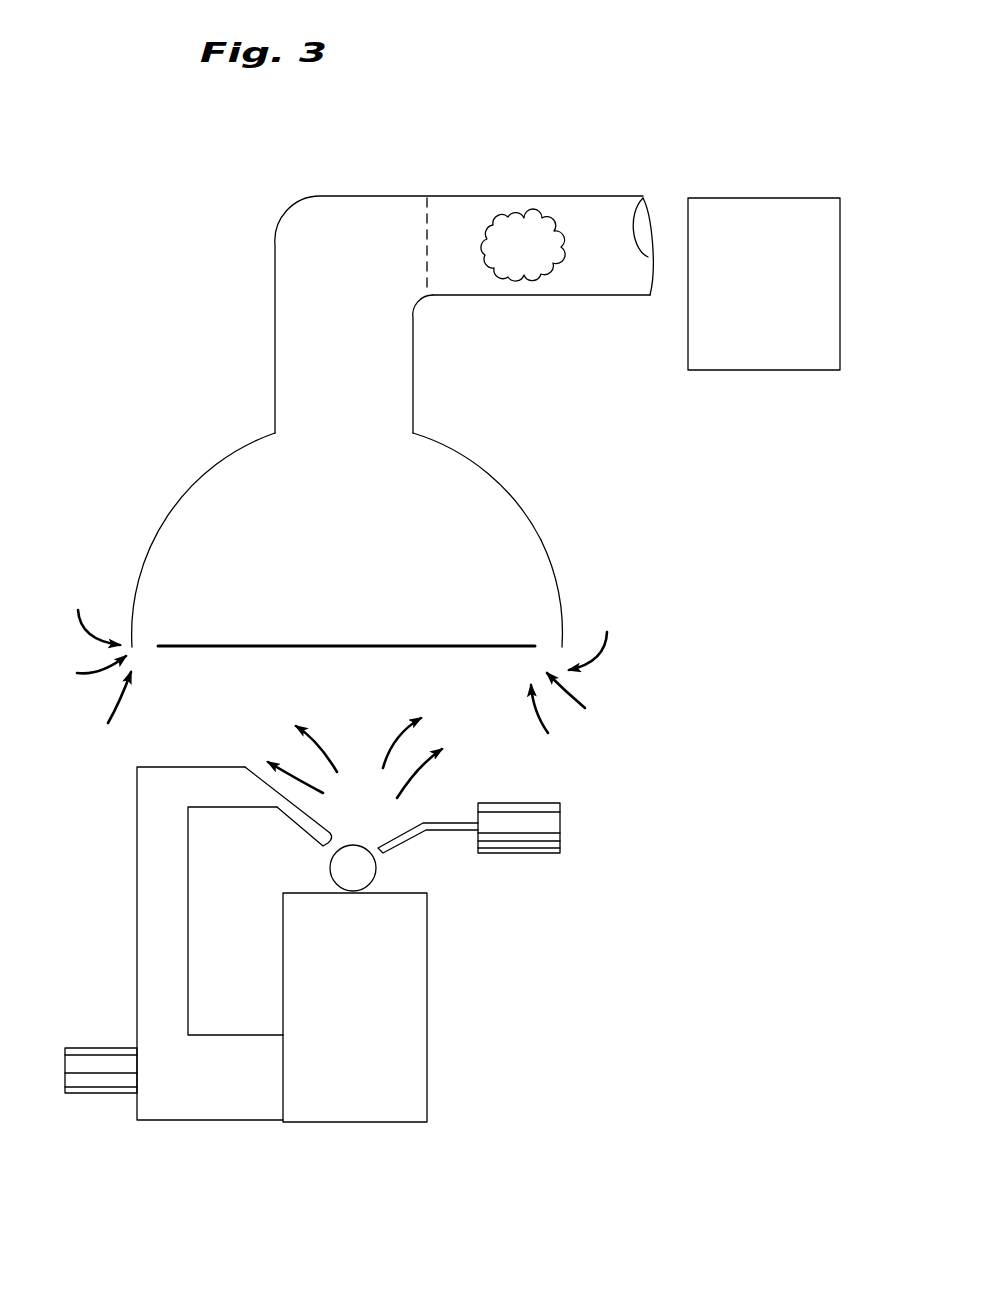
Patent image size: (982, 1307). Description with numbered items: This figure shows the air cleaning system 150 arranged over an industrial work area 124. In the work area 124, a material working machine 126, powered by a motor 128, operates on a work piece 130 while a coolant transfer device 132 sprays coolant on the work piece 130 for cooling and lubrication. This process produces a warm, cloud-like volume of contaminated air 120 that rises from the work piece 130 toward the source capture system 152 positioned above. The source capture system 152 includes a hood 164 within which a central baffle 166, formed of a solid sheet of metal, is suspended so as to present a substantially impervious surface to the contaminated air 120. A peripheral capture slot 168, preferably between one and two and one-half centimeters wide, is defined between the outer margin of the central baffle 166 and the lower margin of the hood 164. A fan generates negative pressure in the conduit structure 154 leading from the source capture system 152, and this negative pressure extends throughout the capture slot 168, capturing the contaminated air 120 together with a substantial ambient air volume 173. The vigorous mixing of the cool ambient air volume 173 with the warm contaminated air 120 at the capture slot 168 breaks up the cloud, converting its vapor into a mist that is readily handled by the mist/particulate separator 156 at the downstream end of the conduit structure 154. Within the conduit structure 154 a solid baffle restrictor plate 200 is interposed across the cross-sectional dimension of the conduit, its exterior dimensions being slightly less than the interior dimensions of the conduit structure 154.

The contaminated air 120 is at (323, 786).
The work area 124 is at (344, 803).
The material working machine 126 is at (152, 900).
The motor 128 is at (98, 1060).
The work piece 130 is at (370, 870).
The coolant transfer device 132 is at (550, 827).
The air cleaning system 150 is at (396, 182).
The source capture system 152 is at (505, 483).
The conduit structure 154 is at (470, 297).
The mist/particulate separator 156 is at (740, 213).
The hood 164 is at (541, 543).
The central baffle 166 is at (376, 644).
The peripheral capture slot 168 is at (151, 628).
The ambient air volume 173 is at (537, 222).
The restrictor plate 200 is at (427, 212).